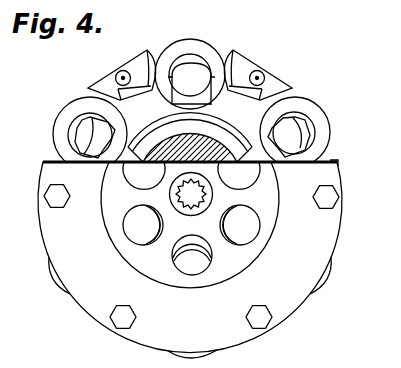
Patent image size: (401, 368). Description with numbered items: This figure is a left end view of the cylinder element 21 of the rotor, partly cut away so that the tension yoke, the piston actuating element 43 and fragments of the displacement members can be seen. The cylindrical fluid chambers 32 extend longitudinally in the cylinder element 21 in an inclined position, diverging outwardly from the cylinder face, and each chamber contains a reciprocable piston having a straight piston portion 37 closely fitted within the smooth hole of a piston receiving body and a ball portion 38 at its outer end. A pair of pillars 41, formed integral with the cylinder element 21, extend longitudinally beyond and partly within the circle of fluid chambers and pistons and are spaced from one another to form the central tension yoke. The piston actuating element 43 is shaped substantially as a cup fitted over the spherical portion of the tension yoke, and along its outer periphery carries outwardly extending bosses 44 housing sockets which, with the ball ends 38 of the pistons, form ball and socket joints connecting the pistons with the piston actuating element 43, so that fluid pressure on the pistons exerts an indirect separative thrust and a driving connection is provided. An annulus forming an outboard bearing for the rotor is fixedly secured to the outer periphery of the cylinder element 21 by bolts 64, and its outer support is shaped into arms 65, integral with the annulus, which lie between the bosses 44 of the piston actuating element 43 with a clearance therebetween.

The cylinder element 21 is at (105, 288).
The cylindrical fluid chamber 32 is at (243, 222).
The straight piston portion 37 is at (295, 145).
The ball portion 38 is at (308, 133).
The pillar 41 is at (220, 147).
The piston actuating element 43 is at (162, 108).
The boss 44 is at (313, 112).
The bolt 64 is at (260, 318).
The arm 65 is at (277, 78).